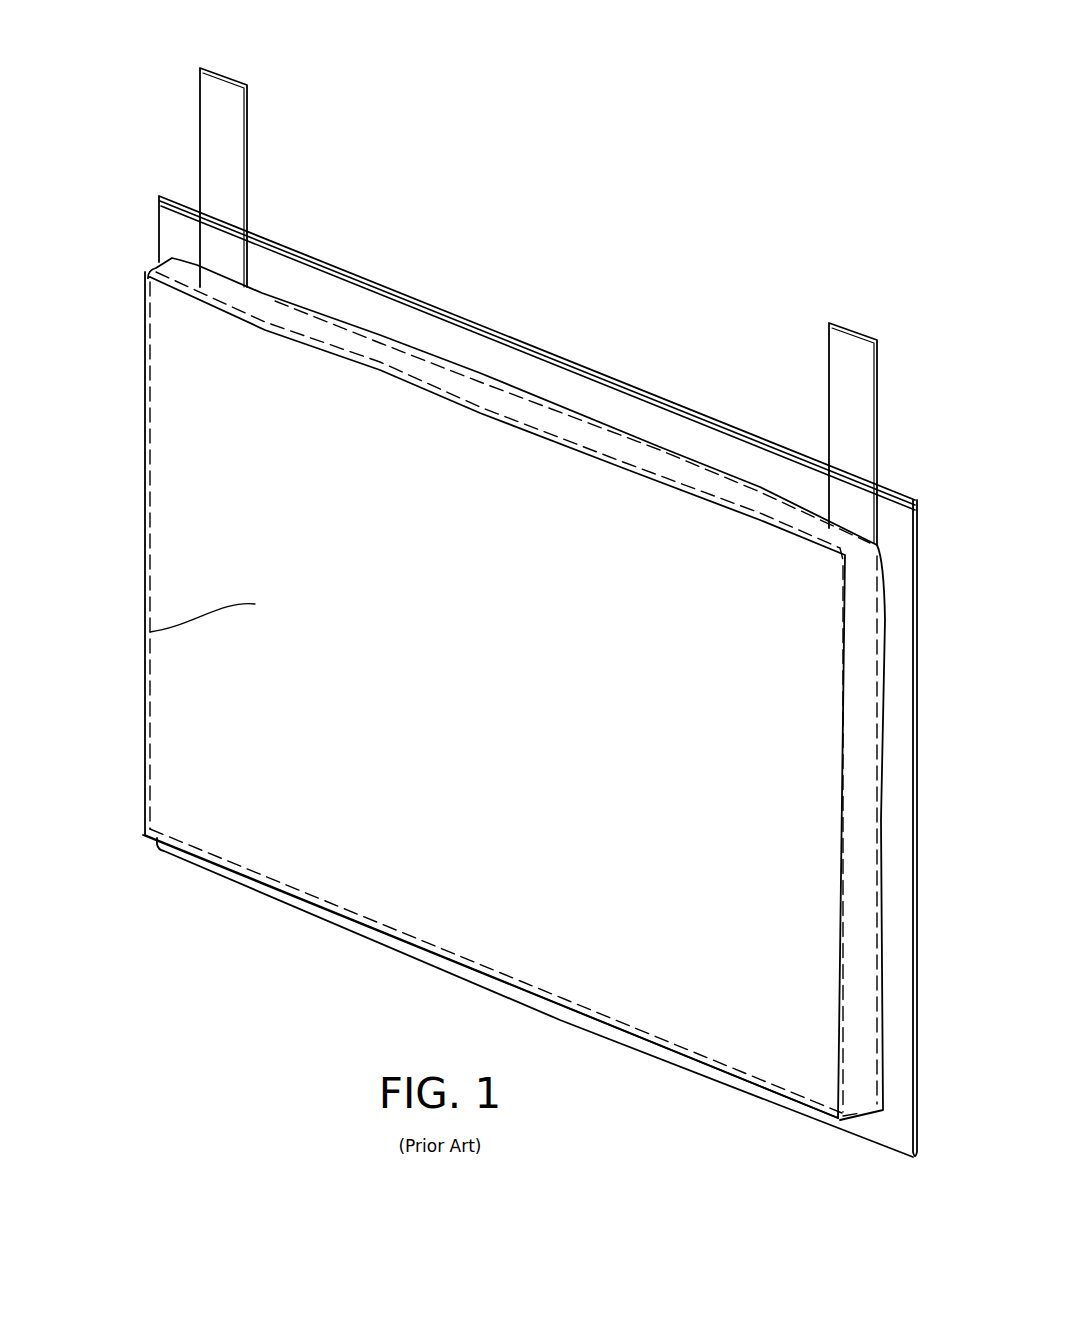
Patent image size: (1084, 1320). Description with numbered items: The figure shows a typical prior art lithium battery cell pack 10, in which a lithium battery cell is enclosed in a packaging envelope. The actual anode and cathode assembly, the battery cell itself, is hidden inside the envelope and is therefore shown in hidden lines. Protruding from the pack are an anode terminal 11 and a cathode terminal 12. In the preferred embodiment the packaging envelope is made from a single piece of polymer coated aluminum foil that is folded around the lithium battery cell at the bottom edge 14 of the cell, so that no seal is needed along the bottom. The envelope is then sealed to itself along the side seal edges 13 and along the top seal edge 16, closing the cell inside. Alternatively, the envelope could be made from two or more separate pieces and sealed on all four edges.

The lithium battery cell pack 10 is at (398, 986).
The anode terminal 11 is at (843, 372).
The cathode terminal 12 is at (228, 113).
The side seal edges 13 is at (172, 250).
The bottom edge 14 is at (270, 890).
The top seal edge 16 is at (477, 338).